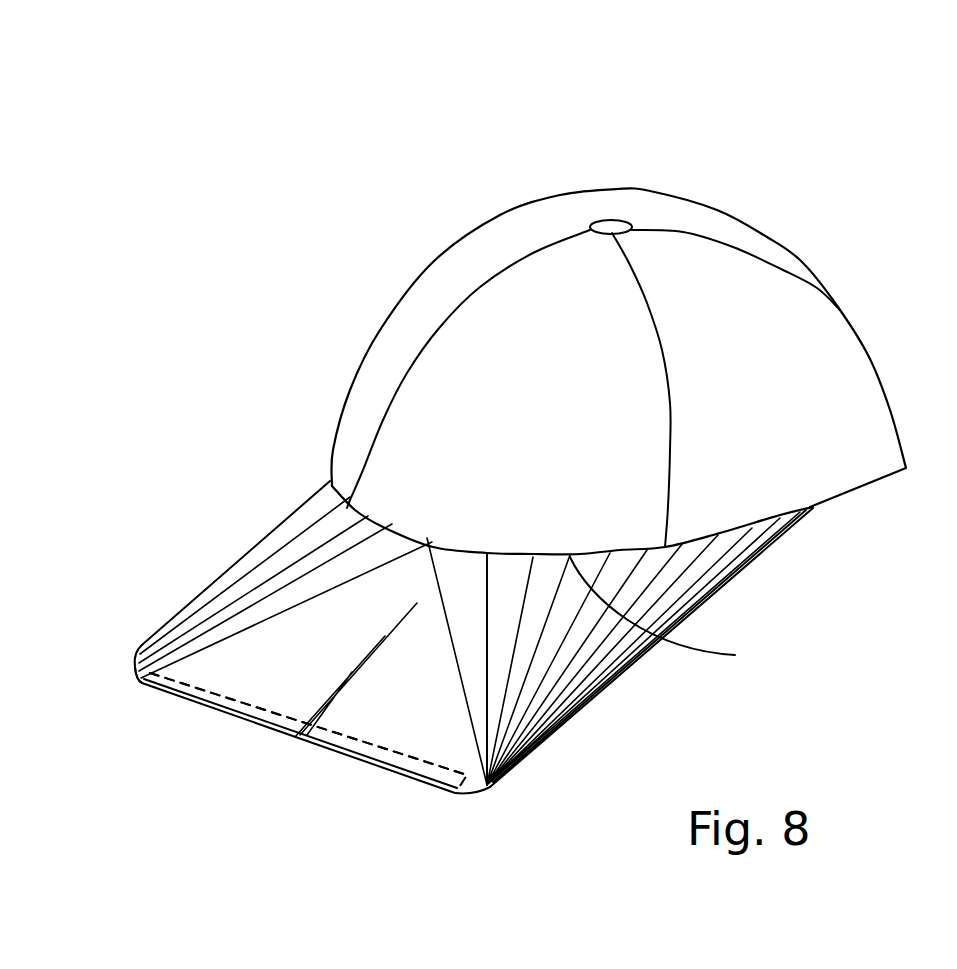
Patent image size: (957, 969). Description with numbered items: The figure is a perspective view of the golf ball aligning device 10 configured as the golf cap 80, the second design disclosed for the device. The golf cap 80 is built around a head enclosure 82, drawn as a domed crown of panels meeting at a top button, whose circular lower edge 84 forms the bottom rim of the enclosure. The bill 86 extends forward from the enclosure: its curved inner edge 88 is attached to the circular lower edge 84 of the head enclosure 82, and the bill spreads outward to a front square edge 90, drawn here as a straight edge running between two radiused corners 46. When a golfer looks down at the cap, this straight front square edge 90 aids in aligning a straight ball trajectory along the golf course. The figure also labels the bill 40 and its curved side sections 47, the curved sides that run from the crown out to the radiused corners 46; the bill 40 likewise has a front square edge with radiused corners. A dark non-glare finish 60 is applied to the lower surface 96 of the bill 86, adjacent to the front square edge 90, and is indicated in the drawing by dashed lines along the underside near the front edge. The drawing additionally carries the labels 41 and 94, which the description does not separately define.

The golf ball aligning device 10 is at (722, 127).
The golf cap 80 is at (738, 272).
The head enclosure 82 is at (618, 486).
The circular lower edge 84 is at (675, 617).
The bill 40 is at (650, 607).
The brim panel 41 is at (434, 642).
The curved side sections 47 is at (318, 538).
The curved inner edge 88 is at (330, 477).
The bill 86 is at (217, 573).
The radiused corners 46 is at (135, 668).
The front square edge 90 is at (387, 770).
The brim underside 94 is at (253, 665).
The dark non-glare finish 60 is at (262, 708).
The lower surface 96 is at (360, 717).